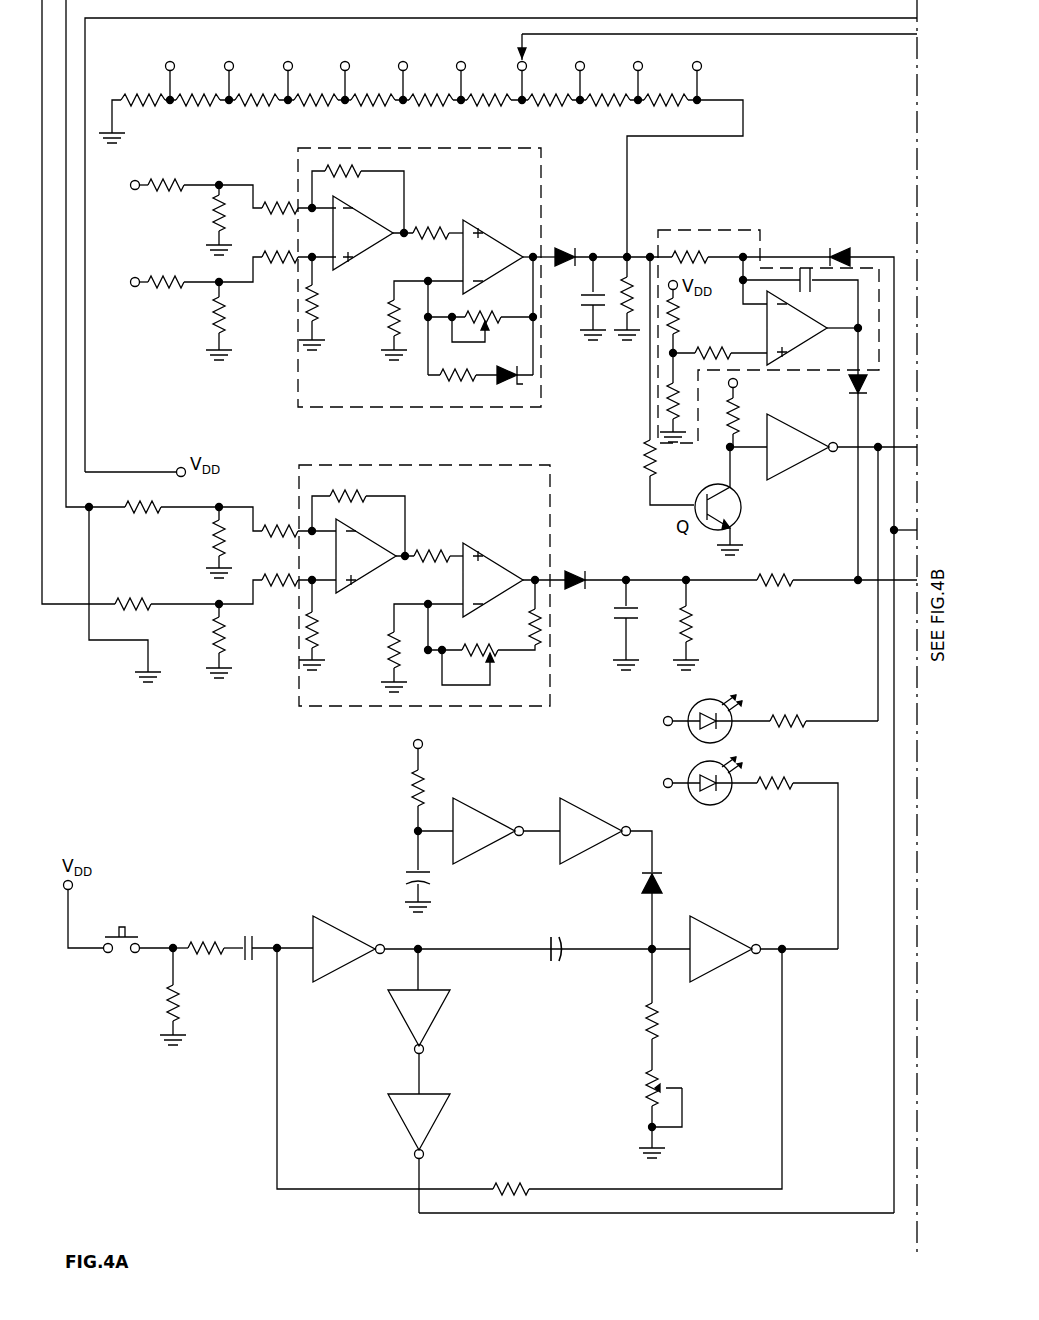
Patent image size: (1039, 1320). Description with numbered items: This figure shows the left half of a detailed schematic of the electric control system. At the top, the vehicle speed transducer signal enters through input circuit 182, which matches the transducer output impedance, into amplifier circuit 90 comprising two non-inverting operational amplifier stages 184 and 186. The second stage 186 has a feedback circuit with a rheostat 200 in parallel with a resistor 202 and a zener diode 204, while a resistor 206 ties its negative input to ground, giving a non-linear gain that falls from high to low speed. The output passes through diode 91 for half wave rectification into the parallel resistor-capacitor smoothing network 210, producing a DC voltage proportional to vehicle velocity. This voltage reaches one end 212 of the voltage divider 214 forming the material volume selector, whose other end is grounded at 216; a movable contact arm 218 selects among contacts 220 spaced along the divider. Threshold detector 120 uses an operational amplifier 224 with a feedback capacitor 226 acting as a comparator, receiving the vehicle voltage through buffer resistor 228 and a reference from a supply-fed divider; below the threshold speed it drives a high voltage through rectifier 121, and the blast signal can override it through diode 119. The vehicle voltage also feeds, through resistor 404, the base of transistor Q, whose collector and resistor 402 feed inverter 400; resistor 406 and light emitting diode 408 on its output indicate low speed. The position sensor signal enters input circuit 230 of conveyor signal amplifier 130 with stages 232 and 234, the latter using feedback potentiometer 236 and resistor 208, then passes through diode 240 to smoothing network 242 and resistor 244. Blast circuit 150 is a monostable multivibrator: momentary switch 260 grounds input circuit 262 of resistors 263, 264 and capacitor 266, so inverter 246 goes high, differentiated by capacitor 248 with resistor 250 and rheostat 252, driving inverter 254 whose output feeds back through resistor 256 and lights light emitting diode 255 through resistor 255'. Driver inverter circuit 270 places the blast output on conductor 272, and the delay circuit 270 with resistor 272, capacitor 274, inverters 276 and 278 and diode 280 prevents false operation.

The contacts 220 is at (231, 61).
The resistor chain voltage divider 214 is at (407, 82).
The movable contact arm 218 is at (520, 44).
The end of voltage divider 212 is at (700, 98).
The system ground connection 216 is at (118, 124).
The amplifier circuit 90 is at (298, 160).
The first operational amplifier stage 184 is at (389, 217).
The second operational amplifier stage 186 is at (509, 252).
The diode 91 is at (566, 248).
The threshold detector 120 is at (688, 230).
The buffer resistor 228 is at (706, 244).
The diode 119 is at (836, 248).
The input circuit 182 is at (223, 218).
The capacitor 226 is at (812, 284).
The operational amplifier 224 is at (767, 330).
The rheostat 200 is at (481, 314).
The resistor 206 is at (390, 322).
The resistor 202 is at (473, 368).
The zener diode 204 is at (498, 370).
The resistor-capacitor smoothing network 210 is at (615, 338).
The rectifier 121 is at (848, 386).
The resistor 402 is at (728, 414).
The resistor 404 is at (646, 454).
The third inverter 400 is at (806, 466).
The conveyor signal amplifier 130 is at (384, 462).
The second operational amplifier stage 234 is at (514, 580).
The diode 240 is at (576, 571).
The resistor-capacitor smoothing network 242 is at (656, 612).
The input circuit 230 is at (216, 540).
The first operational amplifier stage 232 is at (387, 550).
The resistor 208 is at (533, 626).
The potentiometer 236 is at (446, 648).
The resistor 244 is at (768, 588).
The light emitting diode 408 is at (706, 704).
The resistor 406 is at (795, 716).
The light emitting diode 255 is at (689, 790).
The resistor 255' is at (797, 863).
The driver inverter circuit 270 is at (520, 994).
The conductor 272 is at (407, 794).
The inverter 276 is at (495, 856).
The inverter 278 is at (595, 856).
The capacitor 274 is at (432, 888).
The diode 280 is at (663, 888).
The blast circuit 150 is at (359, 879).
The inverter 254 is at (719, 933).
The momentary switch 260 is at (132, 926).
The resistor 264 is at (212, 938).
The capacitor 266 is at (249, 935).
The input circuit 262 is at (209, 970).
The resistor 263 is at (166, 1008).
The inverter 246 is at (352, 982).
The capacitor 248 is at (552, 966).
The resistor 250 is at (660, 1030).
The rheostat 252 is at (673, 1084).
The resistor 256 is at (515, 1183).